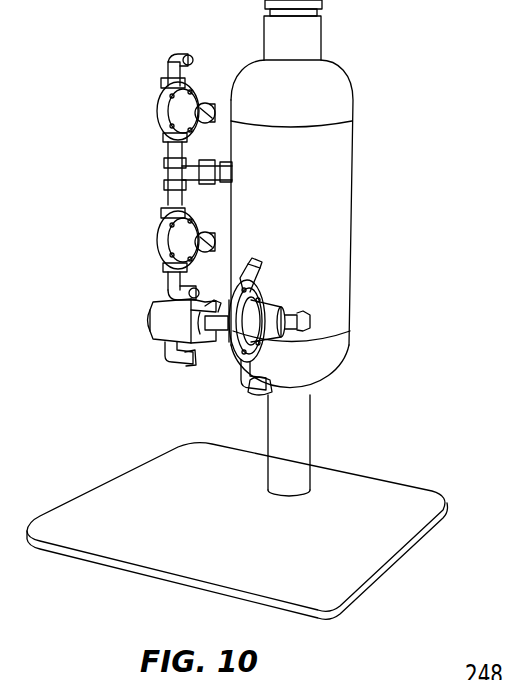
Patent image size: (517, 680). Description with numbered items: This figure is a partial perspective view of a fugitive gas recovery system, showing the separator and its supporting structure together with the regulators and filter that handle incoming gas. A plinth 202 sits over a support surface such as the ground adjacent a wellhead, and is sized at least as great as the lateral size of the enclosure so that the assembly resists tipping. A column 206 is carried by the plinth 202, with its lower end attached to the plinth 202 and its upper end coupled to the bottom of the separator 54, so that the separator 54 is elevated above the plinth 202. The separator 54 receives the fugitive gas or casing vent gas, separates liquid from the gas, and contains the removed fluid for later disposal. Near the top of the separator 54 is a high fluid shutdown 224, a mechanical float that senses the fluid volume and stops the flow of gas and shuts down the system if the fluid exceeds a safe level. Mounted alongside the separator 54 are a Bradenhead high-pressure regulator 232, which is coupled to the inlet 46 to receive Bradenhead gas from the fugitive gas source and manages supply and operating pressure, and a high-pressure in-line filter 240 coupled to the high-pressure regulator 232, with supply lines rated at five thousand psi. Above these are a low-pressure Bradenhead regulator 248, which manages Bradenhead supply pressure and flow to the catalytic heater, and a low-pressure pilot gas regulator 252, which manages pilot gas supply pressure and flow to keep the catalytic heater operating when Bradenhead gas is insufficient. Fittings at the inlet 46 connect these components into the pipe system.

The separator 54 is at (342, 178).
The high fluid shutdown 224 is at (298, 50).
The low-pressure Bradenhead regulator 248 is at (158, 106).
The low-pressure pilot gas regulator 252 is at (158, 240).
The high-pressure in-line filter 240 is at (150, 326).
The Bradenhead high-pressure regulator 232 is at (262, 320).
The inlet 46 is at (190, 367).
The column 206 is at (303, 433).
The plinth 202 is at (415, 505).